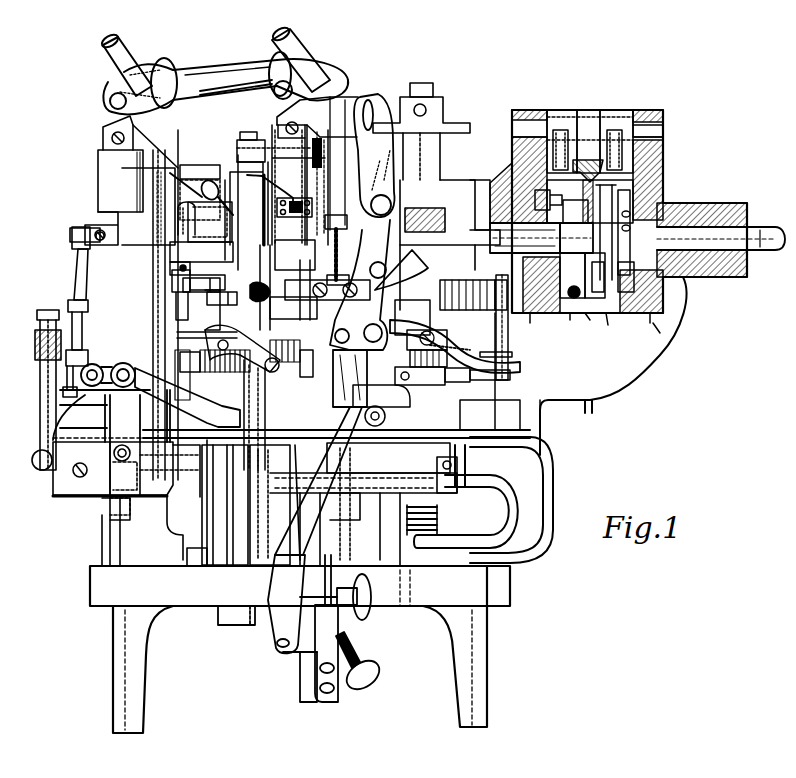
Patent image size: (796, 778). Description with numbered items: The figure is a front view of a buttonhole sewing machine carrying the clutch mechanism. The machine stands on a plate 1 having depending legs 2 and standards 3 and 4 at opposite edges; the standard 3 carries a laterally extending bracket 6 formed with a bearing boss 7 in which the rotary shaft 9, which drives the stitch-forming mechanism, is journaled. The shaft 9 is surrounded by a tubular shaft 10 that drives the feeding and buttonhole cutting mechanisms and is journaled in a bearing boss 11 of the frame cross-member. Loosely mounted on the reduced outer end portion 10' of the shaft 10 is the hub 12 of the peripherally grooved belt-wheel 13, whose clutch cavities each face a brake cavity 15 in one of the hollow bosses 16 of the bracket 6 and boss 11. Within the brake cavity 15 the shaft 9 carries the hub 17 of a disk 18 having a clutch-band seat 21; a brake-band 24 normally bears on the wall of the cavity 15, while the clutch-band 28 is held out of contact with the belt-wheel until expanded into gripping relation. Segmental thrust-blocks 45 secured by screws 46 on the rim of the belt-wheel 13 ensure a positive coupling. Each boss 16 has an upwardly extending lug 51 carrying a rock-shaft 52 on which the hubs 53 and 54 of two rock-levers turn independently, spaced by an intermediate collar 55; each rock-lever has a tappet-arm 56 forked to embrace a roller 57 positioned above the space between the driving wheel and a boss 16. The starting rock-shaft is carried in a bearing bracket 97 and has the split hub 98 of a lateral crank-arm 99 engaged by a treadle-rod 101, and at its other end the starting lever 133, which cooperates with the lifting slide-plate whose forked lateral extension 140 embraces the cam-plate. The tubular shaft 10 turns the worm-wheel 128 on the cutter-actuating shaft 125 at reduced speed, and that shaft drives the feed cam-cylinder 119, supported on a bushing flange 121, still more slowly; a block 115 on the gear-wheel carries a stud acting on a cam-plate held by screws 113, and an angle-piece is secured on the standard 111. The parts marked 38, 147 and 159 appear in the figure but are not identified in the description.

The plate 1 is at (300, 586).
The depending legs 2 is at (478, 675).
The standard 3 is at (488, 403).
The standard 4 is at (110, 511).
The laterally extending bracket 6 is at (635, 380).
The bearing boss 7 is at (705, 208).
The rotary shaft 9 is at (721, 238).
The tubular shaft 10 is at (525, 238).
The reduced outer end portion 10' is at (576, 238).
The bearing boss 11 is at (480, 192).
The hub 12 is at (561, 206).
The belt-wheel 13 is at (605, 318).
The brake cavity 15 is at (648, 335).
The hollow bosses 16 is at (630, 318).
The hub 17 is at (665, 280).
The disk 18 is at (628, 200).
The clutch-band seat 21 is at (630, 207).
The brake-band 24 is at (670, 318).
The clutch-band 28 is at (604, 279).
The housing bracket 38 is at (512, 185).
The segmental thrust-blocks 45 is at (583, 318).
The screws 46 is at (566, 320).
The upwardly extending lug 51 is at (518, 112).
The rock-shaft 52 is at (663, 126).
The hub 53 is at (617, 115).
The hub 54 is at (560, 115).
The intermediate collar 55 is at (590, 115).
The tappet-arm 56 is at (588, 164).
The roller 57 is at (553, 135).
The bearing bracket 97 is at (362, 200).
The split hub 98 is at (490, 270).
The lateral crank-arm 99 is at (500, 320).
The treadle-rod 101 is at (515, 356).
The standard 111 is at (367, 360).
The screws 113 is at (222, 300).
The block 115 is at (215, 335).
The feed cam-cylinder 119 is at (205, 400).
The flange 121 is at (400, 302).
The cutter-actuating shaft 125 is at (425, 95).
The worm-wheel 128 is at (433, 195).
The starting lever 133 is at (170, 300).
The slide 159 is at (205, 292).
The forked lateral extension 140 is at (190, 330).
The connecting rod 147 is at (492, 332).